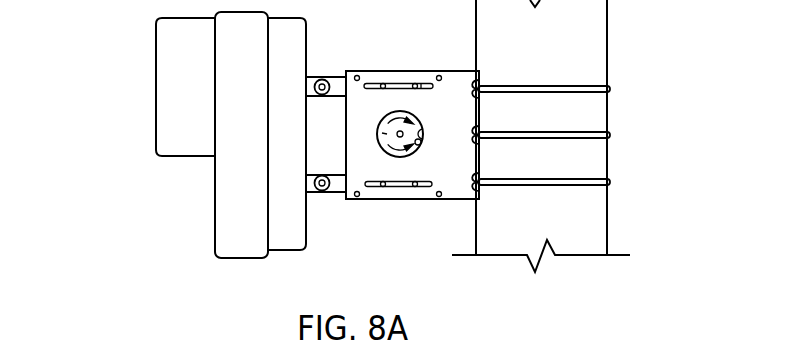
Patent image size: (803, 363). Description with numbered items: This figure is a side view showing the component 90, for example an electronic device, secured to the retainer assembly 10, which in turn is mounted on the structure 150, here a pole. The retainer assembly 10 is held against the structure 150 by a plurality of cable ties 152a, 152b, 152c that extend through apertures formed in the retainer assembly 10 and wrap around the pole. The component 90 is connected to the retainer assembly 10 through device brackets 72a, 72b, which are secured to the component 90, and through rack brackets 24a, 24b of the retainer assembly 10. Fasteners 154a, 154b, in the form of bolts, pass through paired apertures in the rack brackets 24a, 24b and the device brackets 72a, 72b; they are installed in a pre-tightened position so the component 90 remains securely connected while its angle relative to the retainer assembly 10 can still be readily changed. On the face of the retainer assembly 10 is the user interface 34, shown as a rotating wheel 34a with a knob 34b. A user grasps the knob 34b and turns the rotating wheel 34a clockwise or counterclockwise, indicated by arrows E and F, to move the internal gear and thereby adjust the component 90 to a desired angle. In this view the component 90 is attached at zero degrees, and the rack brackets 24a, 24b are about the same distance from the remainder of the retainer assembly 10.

The retainer assembly 10 is at (403, 66).
The rack bracket 24a is at (332, 195).
The rack bracket 24b is at (337, 70).
The user interface 34 is at (418, 115).
The rotating wheel 34a is at (378, 137).
The knob 34b is at (424, 147).
The device bracket 72a is at (316, 194).
The device bracket 72b is at (316, 76).
The component 90 is at (200, 236).
The structure 150 is at (620, 46).
The cable tie 152a is at (611, 182).
The cable tie 152b is at (611, 135).
The cable tie 152c is at (611, 89).
The fastener 154a is at (314, 183).
The fastener 154b is at (314, 87).